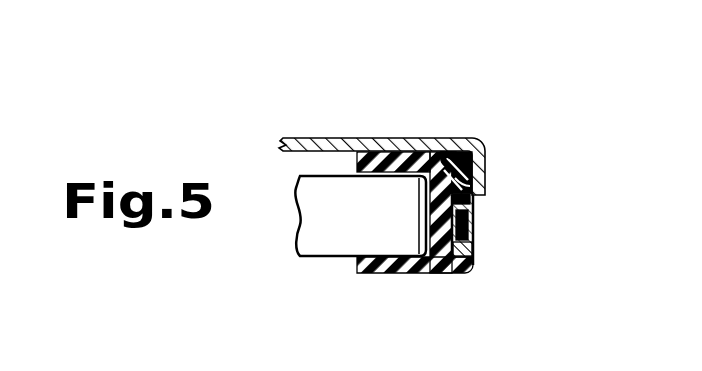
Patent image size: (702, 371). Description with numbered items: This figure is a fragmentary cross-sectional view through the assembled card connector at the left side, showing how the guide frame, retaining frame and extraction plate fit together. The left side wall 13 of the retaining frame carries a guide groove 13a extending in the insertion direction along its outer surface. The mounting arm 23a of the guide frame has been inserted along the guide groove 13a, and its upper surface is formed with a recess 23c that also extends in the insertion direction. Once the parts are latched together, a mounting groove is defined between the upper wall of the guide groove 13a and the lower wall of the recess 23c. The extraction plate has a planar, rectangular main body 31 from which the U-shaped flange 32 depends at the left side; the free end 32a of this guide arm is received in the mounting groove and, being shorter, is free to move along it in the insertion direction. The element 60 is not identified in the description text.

The left side wall 13 is at (435, 218).
The guide groove 13a is at (473, 221).
The mounting arm 23a is at (472, 242).
The recess 23c is at (473, 197).
The main body 31 is at (329, 137).
The flange 32 is at (483, 167).
The free end 32a is at (443, 147).
The panel 60 is at (377, 235).